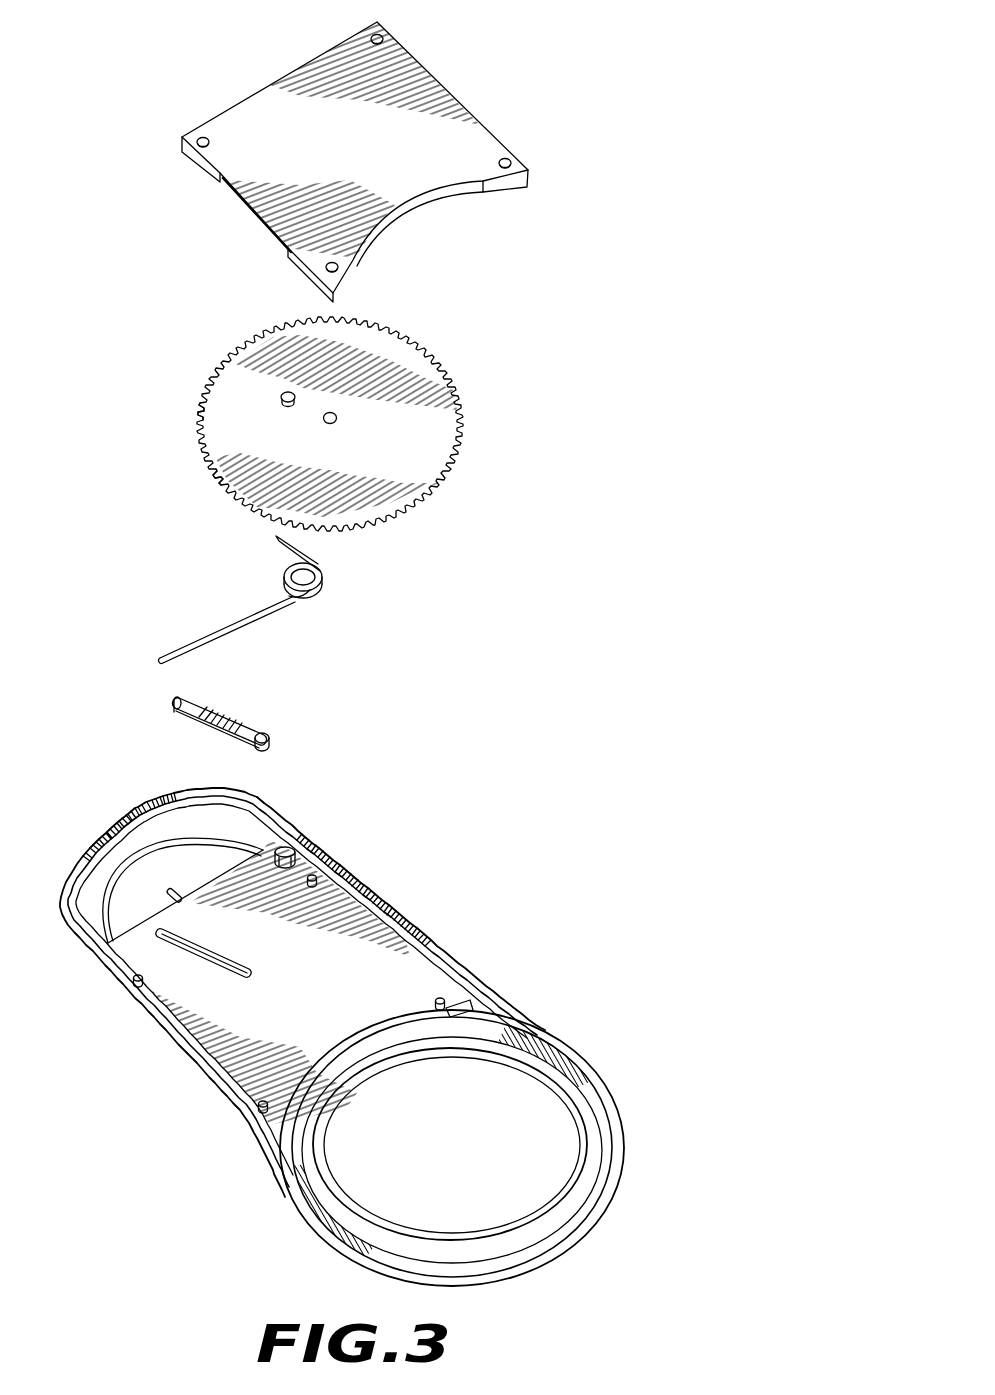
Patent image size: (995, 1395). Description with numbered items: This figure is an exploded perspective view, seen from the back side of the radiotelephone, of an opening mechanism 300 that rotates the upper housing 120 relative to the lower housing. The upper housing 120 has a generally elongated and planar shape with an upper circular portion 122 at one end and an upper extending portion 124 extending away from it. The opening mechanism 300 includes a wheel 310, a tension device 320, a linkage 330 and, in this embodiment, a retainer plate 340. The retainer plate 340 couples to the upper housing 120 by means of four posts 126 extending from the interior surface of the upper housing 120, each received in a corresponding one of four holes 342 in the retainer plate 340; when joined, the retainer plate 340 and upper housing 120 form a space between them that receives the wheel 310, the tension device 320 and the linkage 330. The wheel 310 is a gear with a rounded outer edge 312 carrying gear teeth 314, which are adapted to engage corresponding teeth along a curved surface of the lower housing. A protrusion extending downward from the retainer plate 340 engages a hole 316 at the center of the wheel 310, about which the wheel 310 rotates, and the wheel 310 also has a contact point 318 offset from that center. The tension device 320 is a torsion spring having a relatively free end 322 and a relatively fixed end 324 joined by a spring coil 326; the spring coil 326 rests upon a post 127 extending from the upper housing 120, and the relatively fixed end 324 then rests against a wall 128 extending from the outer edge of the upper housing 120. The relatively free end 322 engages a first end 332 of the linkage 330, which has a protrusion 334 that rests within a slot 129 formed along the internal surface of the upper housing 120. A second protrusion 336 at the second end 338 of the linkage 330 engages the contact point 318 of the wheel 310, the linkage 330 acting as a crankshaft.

The opening mechanism 300 is at (555, 60).
The retainer plate 340 is at (433, 87).
The holes 342 is at (383, 37).
The wheel 310 is at (437, 457).
The rounded outer edge 312 is at (200, 428).
The gear teeth 314 is at (225, 476).
The hole 316 is at (334, 422).
The contact point 318 is at (287, 404).
The tension device 320 is at (321, 569).
The relatively free end 322 is at (212, 633).
The relatively fixed end 324 is at (277, 545).
The spring coil 326 is at (291, 599).
The linkage 330 is at (217, 715).
The first end 332 is at (179, 698).
The protrusion 334 is at (178, 712).
The second protrusion 336 is at (268, 745).
The second end 338 is at (265, 733).
The upper housing 120 is at (592, 1107).
The upper circular portion 122 is at (595, 1173).
The upper extending portion 124 is at (105, 952).
The posts 126 is at (317, 877).
The post 127 is at (293, 847).
The wall 128 is at (85, 855).
The slot 129 is at (240, 973).